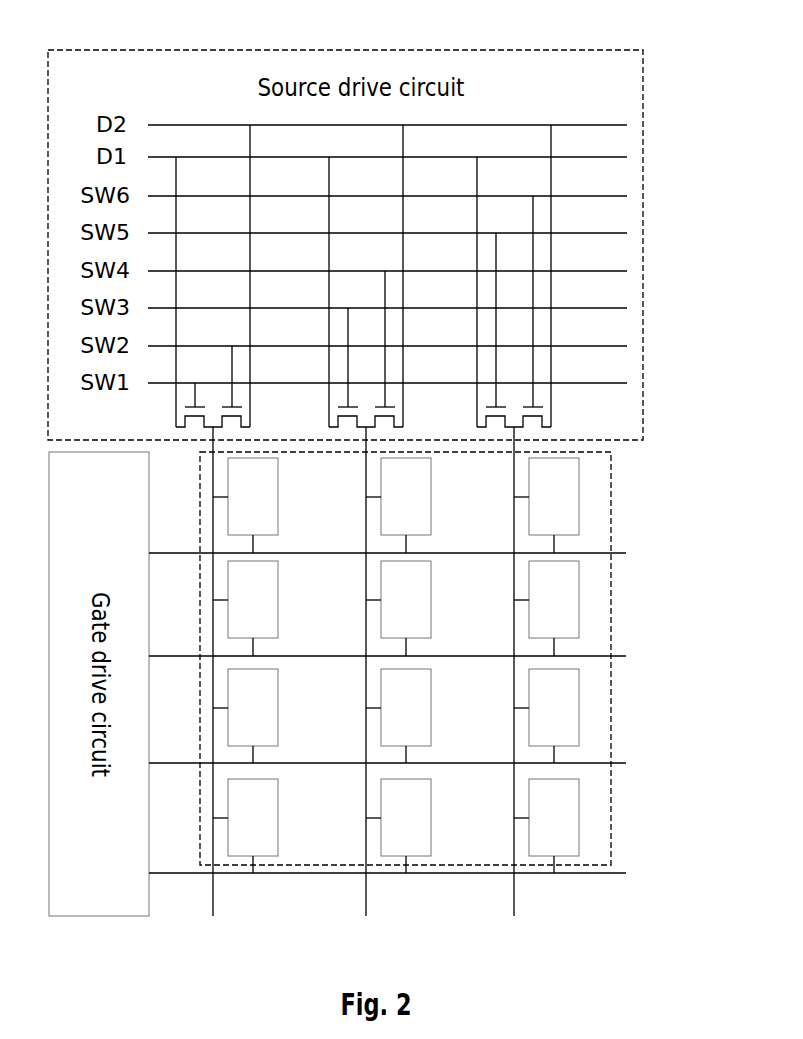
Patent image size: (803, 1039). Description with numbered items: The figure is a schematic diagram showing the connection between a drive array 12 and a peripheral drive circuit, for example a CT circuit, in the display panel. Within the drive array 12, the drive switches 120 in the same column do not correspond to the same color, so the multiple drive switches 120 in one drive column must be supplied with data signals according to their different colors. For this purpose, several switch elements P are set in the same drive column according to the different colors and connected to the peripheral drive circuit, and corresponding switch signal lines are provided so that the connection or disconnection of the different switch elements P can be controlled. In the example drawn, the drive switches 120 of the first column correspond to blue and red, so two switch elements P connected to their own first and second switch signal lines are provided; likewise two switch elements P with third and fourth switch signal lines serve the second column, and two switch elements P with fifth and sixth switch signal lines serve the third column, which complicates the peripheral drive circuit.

The switch element P is at (534, 432).
The drive switch 120 is at (577, 583).
The drive array 12 is at (451, 662).